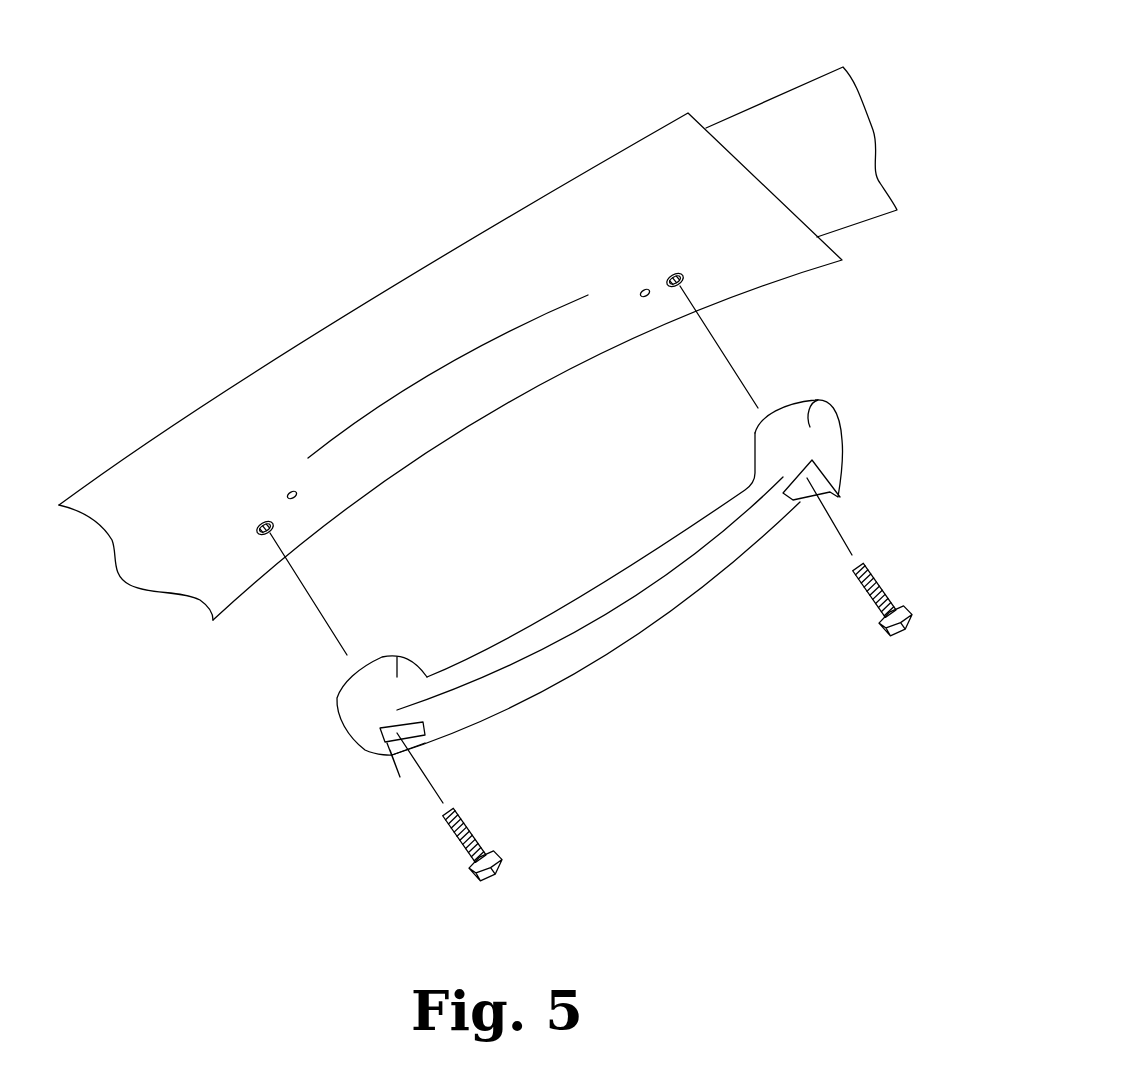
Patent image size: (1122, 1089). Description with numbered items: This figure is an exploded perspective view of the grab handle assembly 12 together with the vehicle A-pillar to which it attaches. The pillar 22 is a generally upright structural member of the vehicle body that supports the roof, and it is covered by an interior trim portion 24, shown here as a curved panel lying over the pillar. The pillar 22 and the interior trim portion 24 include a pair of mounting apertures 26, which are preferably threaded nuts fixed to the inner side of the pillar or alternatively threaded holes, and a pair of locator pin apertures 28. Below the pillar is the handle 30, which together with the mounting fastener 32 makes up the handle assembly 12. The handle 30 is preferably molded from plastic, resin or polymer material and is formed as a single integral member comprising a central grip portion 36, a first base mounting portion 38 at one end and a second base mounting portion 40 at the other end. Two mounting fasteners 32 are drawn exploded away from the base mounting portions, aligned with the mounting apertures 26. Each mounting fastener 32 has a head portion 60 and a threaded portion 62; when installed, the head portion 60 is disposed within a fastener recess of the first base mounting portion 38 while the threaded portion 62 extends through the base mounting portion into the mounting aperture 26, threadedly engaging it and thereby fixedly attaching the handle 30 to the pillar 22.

The handle assembly 12 is at (397, 898).
The pillar 22 is at (763, 117).
The interior trim portion 24 is at (645, 155).
The mounting apertures 26 is at (275, 528).
The locator pin apertures 28 is at (298, 491).
The handle 30 is at (548, 573).
The mounting fastener 32 is at (647, 725).
The grip portion 36 is at (588, 610).
The first base mounting portion 38 is at (397, 657).
The second base mounting portion 40 is at (810, 427).
The head portion 60 is at (460, 879).
The threaded portion 62 is at (450, 828).